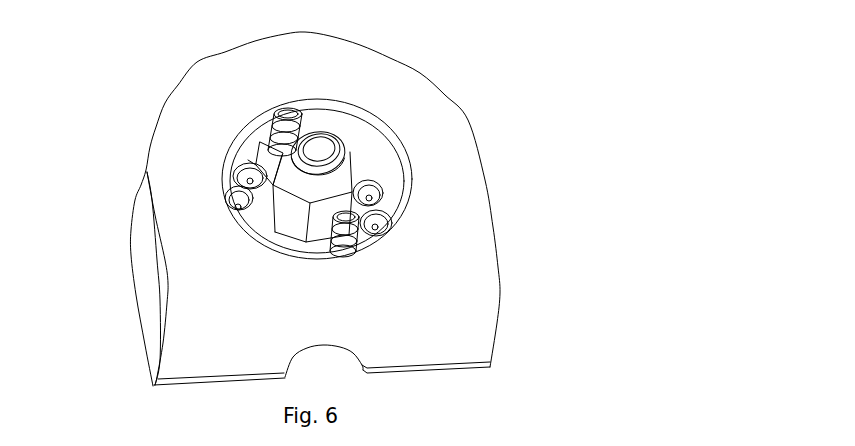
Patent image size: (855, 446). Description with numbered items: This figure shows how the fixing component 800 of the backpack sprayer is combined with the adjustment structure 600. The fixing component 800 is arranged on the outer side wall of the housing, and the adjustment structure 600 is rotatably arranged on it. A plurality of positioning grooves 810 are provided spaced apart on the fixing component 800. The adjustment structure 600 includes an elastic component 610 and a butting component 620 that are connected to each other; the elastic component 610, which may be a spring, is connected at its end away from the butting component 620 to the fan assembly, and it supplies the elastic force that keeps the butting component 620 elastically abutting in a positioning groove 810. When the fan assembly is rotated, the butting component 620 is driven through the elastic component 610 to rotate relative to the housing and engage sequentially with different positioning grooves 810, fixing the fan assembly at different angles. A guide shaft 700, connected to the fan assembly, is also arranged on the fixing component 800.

The adjustment structure 600 is at (197, 178).
The elastic component 610 is at (277, 127).
The butting component 620 is at (265, 157).
The guide shaft 700 is at (300, 207).
The fixing component 800 is at (458, 232).
The positioning groove 810 is at (375, 190).